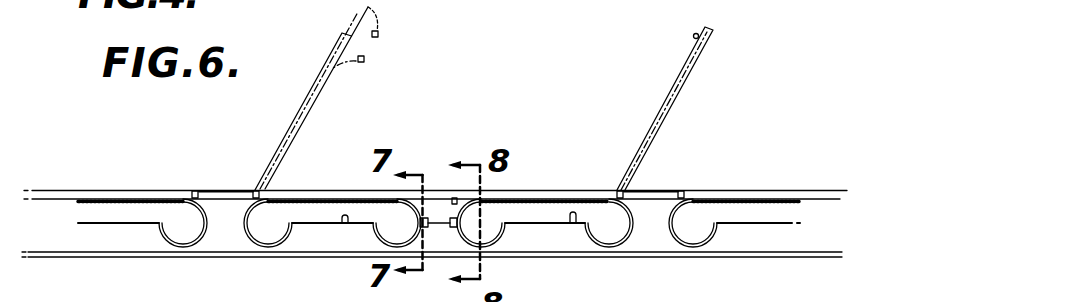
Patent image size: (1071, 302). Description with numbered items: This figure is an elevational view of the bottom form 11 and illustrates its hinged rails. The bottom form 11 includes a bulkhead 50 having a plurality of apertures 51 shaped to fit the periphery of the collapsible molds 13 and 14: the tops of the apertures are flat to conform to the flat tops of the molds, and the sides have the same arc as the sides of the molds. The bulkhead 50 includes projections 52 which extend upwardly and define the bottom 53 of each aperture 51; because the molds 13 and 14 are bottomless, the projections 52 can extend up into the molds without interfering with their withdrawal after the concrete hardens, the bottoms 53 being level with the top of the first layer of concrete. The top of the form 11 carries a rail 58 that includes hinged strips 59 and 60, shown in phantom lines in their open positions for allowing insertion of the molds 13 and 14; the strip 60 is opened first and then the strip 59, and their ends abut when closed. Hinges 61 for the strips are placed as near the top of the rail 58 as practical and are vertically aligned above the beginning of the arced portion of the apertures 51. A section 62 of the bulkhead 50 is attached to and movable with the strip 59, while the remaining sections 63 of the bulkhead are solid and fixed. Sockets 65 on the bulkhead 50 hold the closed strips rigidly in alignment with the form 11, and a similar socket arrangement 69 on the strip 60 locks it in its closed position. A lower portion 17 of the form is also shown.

The bottom form 11 is at (92, 240).
The mold 13 is at (302, 190).
The mold 14 is at (538, 188).
The inner skin 17 is at (128, 258).
The bulkhead 50 is at (303, 225).
The aperture 51 is at (272, 238).
The projection 52 is at (317, 226).
The bottom of aperture 53 is at (345, 224).
The rail 58 is at (115, 197).
The hinged strip 59 is at (309, 92).
The hinged strip 60 is at (668, 114).
The hinge 61 is at (192, 193).
The section of bulkhead 62 is at (370, 52).
The remaining section of bulkhead 63 is at (225, 213).
The socket 65 is at (452, 228).
The socket arrangement 69 is at (693, 37).